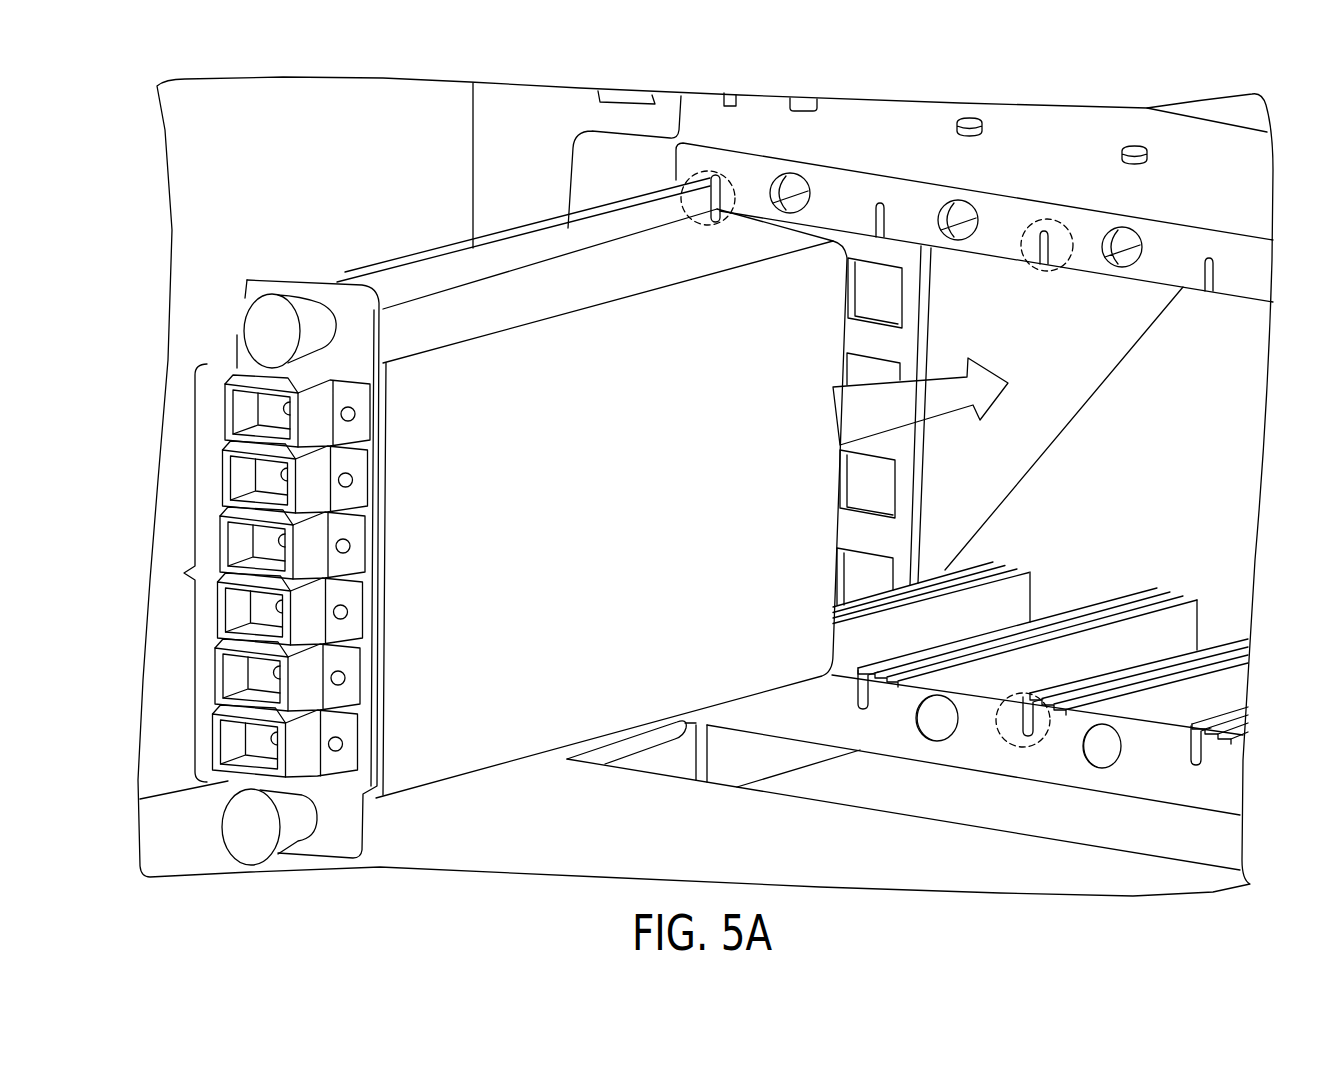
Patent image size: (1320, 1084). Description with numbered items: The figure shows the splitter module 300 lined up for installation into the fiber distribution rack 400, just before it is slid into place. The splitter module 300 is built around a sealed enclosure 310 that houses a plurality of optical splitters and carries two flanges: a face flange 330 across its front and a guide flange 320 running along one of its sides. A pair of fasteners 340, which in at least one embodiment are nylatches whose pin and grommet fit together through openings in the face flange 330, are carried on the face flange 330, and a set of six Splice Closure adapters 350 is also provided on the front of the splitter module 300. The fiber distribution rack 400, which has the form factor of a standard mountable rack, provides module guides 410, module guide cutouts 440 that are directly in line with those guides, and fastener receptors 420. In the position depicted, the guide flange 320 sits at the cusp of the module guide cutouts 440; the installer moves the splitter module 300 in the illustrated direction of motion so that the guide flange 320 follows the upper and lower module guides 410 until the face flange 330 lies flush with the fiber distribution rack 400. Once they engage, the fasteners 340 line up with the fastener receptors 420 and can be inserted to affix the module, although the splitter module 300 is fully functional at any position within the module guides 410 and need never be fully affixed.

The splitter module 300 is at (497, 548).
The sealed enclosure 310 is at (552, 667).
The guide flange 320 is at (550, 242).
The face flange 330 is at (353, 317).
The fasteners 340 is at (257, 322).
The fiber optic connectors / adapters 350 is at (258, 573).
The fiber distribution rack 400 is at (880, 775).
The module guides 410 is at (1135, 146).
The fastener receptors 420 is at (1125, 232).
The module guide cutouts 440 is at (729, 172).